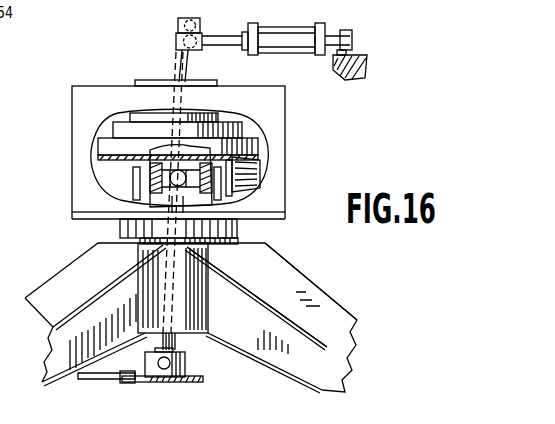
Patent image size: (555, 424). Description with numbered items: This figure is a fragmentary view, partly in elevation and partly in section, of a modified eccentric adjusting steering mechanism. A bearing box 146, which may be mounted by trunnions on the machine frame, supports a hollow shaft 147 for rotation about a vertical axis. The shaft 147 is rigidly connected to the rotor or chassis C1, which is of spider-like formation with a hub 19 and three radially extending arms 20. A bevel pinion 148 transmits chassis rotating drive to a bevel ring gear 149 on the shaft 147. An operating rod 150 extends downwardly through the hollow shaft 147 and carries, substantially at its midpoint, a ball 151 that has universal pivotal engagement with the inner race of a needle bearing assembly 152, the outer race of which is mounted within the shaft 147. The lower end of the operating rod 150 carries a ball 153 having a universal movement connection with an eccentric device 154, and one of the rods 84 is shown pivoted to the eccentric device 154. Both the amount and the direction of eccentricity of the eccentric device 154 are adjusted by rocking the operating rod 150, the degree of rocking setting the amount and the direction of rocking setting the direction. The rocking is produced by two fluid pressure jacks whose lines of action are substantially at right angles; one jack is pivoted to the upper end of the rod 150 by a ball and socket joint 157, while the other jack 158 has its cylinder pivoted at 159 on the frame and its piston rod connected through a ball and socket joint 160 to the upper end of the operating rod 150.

The bearing box 146 is at (72, 140).
The hollow shaft 147 is at (150, 180).
The bevel pinion 148 is at (262, 170).
The bevel ring gear 149 is at (258, 146).
The operating rod 150 is at (180, 75).
The ball 151 is at (116, 122).
The needle bearing assembly 152 is at (182, 182).
The ball 153 is at (172, 362).
The eccentric device 154 is at (185, 380).
The ball and socket joint 157 is at (180, 24).
The jack 158 is at (269, 50).
The pivot 159 is at (340, 30).
The ball and socket joint 160 is at (203, 35).
The hub 19 is at (193, 288).
The radially extending arms 20 is at (300, 297).
The rods 84 is at (95, 376).
The chassis C1 is at (82, 254).